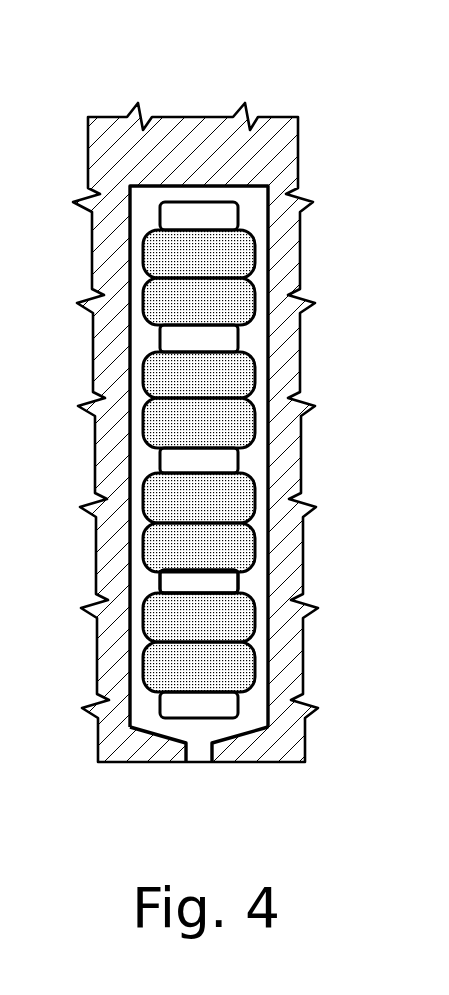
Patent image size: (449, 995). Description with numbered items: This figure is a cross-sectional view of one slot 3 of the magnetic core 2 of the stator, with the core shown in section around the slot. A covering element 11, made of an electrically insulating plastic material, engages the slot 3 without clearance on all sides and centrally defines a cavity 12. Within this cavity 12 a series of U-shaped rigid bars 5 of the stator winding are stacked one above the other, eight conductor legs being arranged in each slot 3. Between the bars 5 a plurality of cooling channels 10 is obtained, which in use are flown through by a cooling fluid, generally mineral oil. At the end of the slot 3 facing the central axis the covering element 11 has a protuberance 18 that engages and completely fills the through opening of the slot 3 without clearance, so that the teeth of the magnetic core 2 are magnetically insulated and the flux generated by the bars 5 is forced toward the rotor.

The magnetic core 2 is at (203, 150).
The slot 3 is at (128, 458).
The U-shaped rigid bar 5 is at (198, 665).
The cooling channel 10 is at (196, 341).
The covering element 11 is at (167, 167).
The cavity 12 is at (242, 583).
The protuberance 18 is at (198, 746).